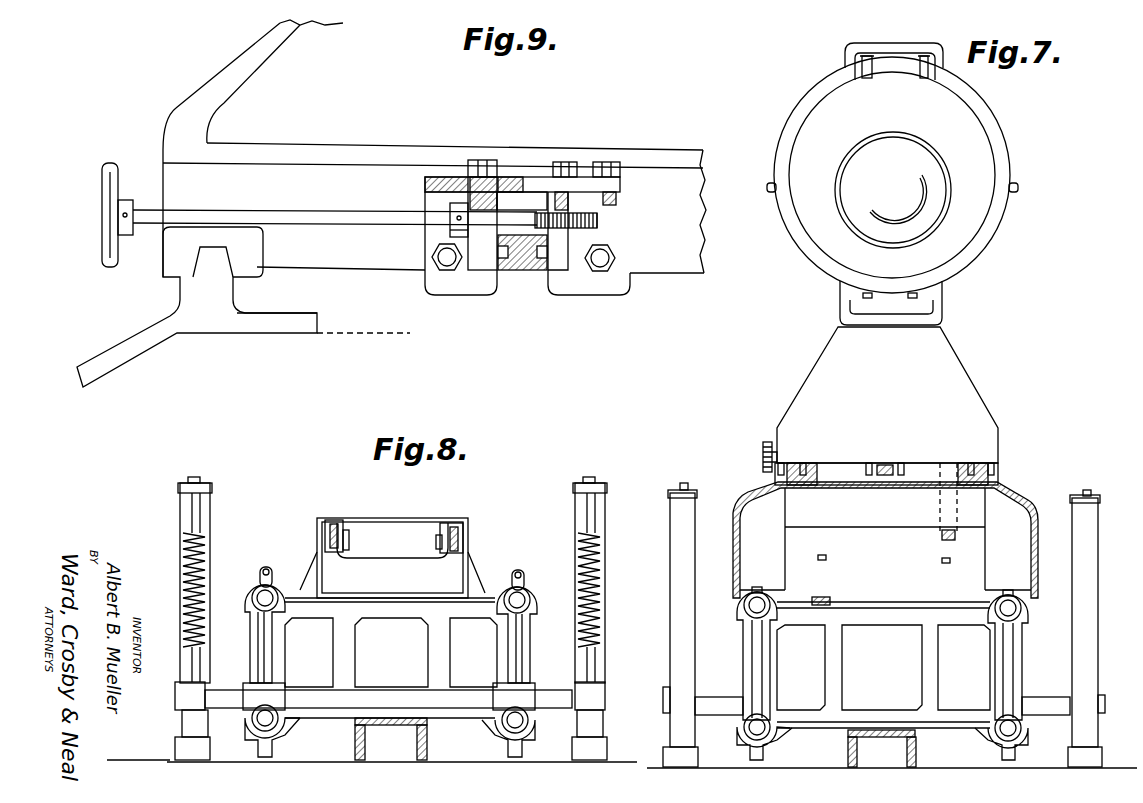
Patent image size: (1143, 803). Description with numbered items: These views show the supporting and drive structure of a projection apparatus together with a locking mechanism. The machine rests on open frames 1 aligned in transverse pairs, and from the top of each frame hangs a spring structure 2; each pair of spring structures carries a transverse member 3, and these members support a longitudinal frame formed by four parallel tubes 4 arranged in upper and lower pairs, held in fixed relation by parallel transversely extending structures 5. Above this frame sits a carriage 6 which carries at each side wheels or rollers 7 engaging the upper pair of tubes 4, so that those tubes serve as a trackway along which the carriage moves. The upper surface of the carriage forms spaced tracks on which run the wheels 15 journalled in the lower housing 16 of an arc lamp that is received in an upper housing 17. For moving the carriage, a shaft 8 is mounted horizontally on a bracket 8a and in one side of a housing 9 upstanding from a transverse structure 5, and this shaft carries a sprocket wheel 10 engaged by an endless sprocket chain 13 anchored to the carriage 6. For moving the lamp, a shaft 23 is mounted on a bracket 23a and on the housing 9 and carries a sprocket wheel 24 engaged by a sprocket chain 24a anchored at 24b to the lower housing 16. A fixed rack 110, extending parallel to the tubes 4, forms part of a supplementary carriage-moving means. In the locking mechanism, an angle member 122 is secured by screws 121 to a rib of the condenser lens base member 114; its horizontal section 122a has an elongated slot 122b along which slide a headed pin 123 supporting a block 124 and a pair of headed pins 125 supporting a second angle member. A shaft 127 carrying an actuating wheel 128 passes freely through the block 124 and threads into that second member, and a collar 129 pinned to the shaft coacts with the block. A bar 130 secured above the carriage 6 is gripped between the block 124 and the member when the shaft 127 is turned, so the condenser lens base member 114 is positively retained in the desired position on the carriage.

In FIG. 9, the condenser lens base member 114 is at (183, 110).
In FIG. 9, the actuating wheel 128 is at (110, 173).
In FIG. 9, the shaft 127 is at (295, 213).
In FIG. 9, the collar 129 is at (450, 232).
In FIG. 9, the horizontal section 122a is at (538, 180).
In FIG. 9, the elongated slot 122b is at (467, 180).
In FIG. 9, the headed pin 123 is at (480, 180).
In FIG. 9, the headed pins 125 is at (622, 175).
In FIG. 9, the block 124 is at (485, 218).
In FIG. 9, the angle member 122 is at (482, 275).
In FIG. 9, the bar 130 is at (525, 270).
In FIG. 7, the bar 130 is at (888, 463).
In FIG. 9, the screws 121 is at (450, 262).
In FIG. 7, the upper housing 17 is at (977, 222).
In FIG. 7, the lower housing 16 is at (960, 388).
In FIG. 7, the wheels 15 is at (795, 462).
In FIG. 7, the carriage 6 is at (1015, 502).
In FIG. 7, the anchorage 24b is at (943, 540).
In FIG. 7, the endless sprocket chain 13 is at (826, 558).
In FIG. 7, the sprocket chain 24a is at (946, 563).
In FIG. 7, the fixed rack 110 is at (830, 598).
In FIG. 7, the transversely extending structures 5 is at (877, 618).
In FIG. 8, the transversely extending structures 5 is at (362, 647).
In FIG. 7, the tubes 4 is at (768, 602).
In FIG. 8, the tubes 4 is at (275, 588).
In FIG. 7, the wheels or rollers 7 is at (758, 590).
In FIG. 7, the transverse member 3 is at (1043, 707).
In FIG. 8, the transverse member 3 is at (548, 698).
In FIG. 7, the open frames 1 is at (678, 623).
In FIG. 8, the open frames 1 is at (203, 513).
In FIG. 8, the spring structure 2 is at (208, 580).
In FIG. 8, the housing 9 is at (398, 537).
In FIG. 8, the shaft 8 is at (315, 538).
In FIG. 8, the sprocket wheel 10 is at (330, 523).
In FIG. 8, the bracket 8a is at (340, 532).
In FIG. 8, the bracket 23a is at (442, 532).
In FIG. 8, the sprocket wheel 24 is at (457, 532).
In FIG. 8, the shaft 23 is at (468, 540).